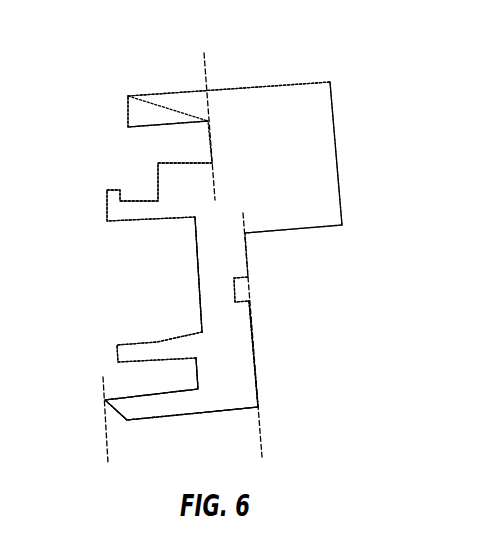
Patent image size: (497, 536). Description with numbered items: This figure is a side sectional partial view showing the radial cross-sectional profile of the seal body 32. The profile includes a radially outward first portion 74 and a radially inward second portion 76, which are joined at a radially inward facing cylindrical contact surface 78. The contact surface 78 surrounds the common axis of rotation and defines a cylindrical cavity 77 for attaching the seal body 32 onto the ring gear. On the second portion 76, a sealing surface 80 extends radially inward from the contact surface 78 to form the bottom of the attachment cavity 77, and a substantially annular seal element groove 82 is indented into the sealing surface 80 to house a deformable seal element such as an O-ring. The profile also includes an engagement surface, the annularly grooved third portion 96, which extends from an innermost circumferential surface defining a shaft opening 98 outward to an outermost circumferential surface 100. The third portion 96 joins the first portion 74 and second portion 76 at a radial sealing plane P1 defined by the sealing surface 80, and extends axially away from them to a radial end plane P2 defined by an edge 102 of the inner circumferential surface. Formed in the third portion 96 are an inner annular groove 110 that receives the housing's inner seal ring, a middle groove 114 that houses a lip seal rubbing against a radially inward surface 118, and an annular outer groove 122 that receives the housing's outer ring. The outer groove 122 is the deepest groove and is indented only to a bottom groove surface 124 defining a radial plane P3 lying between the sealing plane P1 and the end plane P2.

The seal body 32 is at (351, 131).
The first portion 74 is at (285, 186).
The second portion 76 is at (233, 396).
The cylindrical cavity 77 is at (337, 322).
The contact surface 78 is at (292, 232).
The sealing surface 80 is at (255, 353).
The seal element groove 82 is at (235, 289).
The third portion 96 is at (102, 245).
The shaft opening 98 is at (207, 412).
The outermost circumferential surface 100 is at (290, 82).
The edge 102 is at (105, 398).
The inner annular groove 110 is at (198, 373).
The middle groove 114 is at (200, 290).
The radially inward surface 118 is at (135, 343).
The outer groove 122 is at (210, 145).
The bottom groove surface 124 is at (208, 129).
The radial sealing plane P1 is at (260, 432).
The radial end plane P2 is at (108, 452).
The radial plane P3 is at (207, 60).